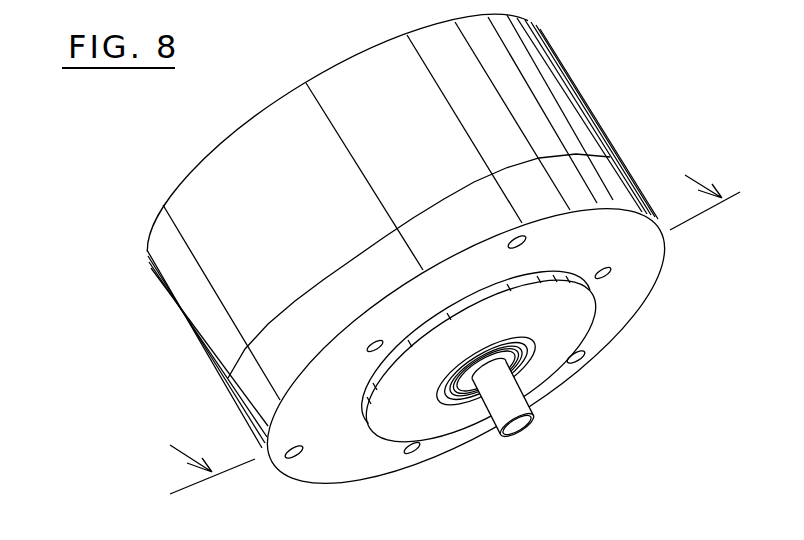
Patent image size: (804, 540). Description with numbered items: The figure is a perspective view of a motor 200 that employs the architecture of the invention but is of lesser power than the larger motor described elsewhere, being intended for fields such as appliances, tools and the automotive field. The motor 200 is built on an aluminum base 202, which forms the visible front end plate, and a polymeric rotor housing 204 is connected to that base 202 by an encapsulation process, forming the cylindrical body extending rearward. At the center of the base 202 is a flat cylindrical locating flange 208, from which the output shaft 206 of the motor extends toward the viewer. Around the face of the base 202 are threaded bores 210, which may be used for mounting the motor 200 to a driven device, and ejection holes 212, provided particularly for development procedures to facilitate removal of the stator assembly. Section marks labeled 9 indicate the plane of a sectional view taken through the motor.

The motor 200 is at (680, 24).
The aluminum base 202 is at (623, 304).
The polymeric rotor housing 204 is at (566, 91).
The output shaft 206 is at (514, 407).
The flat cylindrical locating flange 208 is at (390, 420).
The threaded bores 210 is at (509, 238).
The ejection holes 212 is at (366, 347).
The section line 9- 9 is at (459, 343).